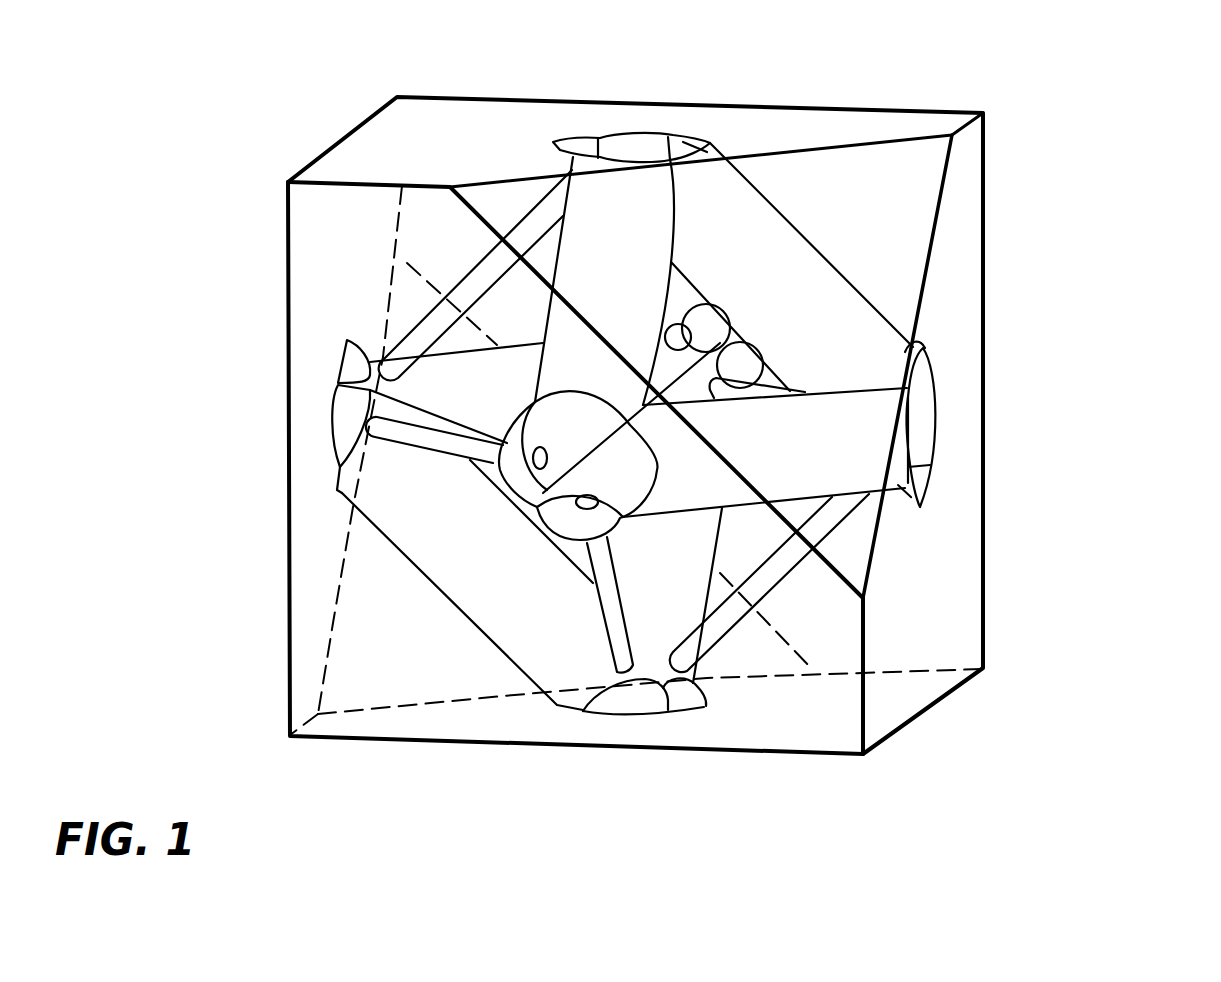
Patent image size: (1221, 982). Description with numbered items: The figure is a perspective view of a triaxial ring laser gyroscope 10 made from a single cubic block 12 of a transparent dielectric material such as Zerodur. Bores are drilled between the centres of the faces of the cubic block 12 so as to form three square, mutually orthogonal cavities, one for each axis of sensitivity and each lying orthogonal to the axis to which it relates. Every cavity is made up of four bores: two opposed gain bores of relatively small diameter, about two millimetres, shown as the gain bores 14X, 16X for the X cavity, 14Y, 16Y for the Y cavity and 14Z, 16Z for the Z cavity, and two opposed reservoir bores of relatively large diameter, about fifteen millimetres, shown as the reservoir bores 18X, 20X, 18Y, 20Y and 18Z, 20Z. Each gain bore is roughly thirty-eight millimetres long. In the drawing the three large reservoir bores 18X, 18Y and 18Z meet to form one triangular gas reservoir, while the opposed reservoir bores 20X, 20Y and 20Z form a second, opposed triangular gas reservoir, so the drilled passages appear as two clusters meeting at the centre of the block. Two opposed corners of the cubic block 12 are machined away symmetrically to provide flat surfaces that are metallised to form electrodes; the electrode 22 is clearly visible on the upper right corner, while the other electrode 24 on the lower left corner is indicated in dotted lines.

The triaxial ring laser gyroscope 10 is at (1133, 88).
The cubic block 12 is at (343, 157).
The gain bore 14X is at (608, 606).
The gain bore 14Y is at (450, 440).
The gain bore 14Z is at (507, 312).
The gain bore 16X is at (673, 330).
The gain bore 16Y is at (758, 397).
The gain bore 16Z is at (792, 537).
The reservoir bore 18X is at (618, 296).
The reservoir bore 18Y is at (801, 458).
The reservoir bore 18Z is at (808, 315).
The reservoir bore 20X is at (682, 595).
The reservoir bore 20Y is at (521, 399).
The reservoir bore 20Z is at (534, 585).
The electrode 22 is at (884, 208).
The electrode 24 is at (322, 616).